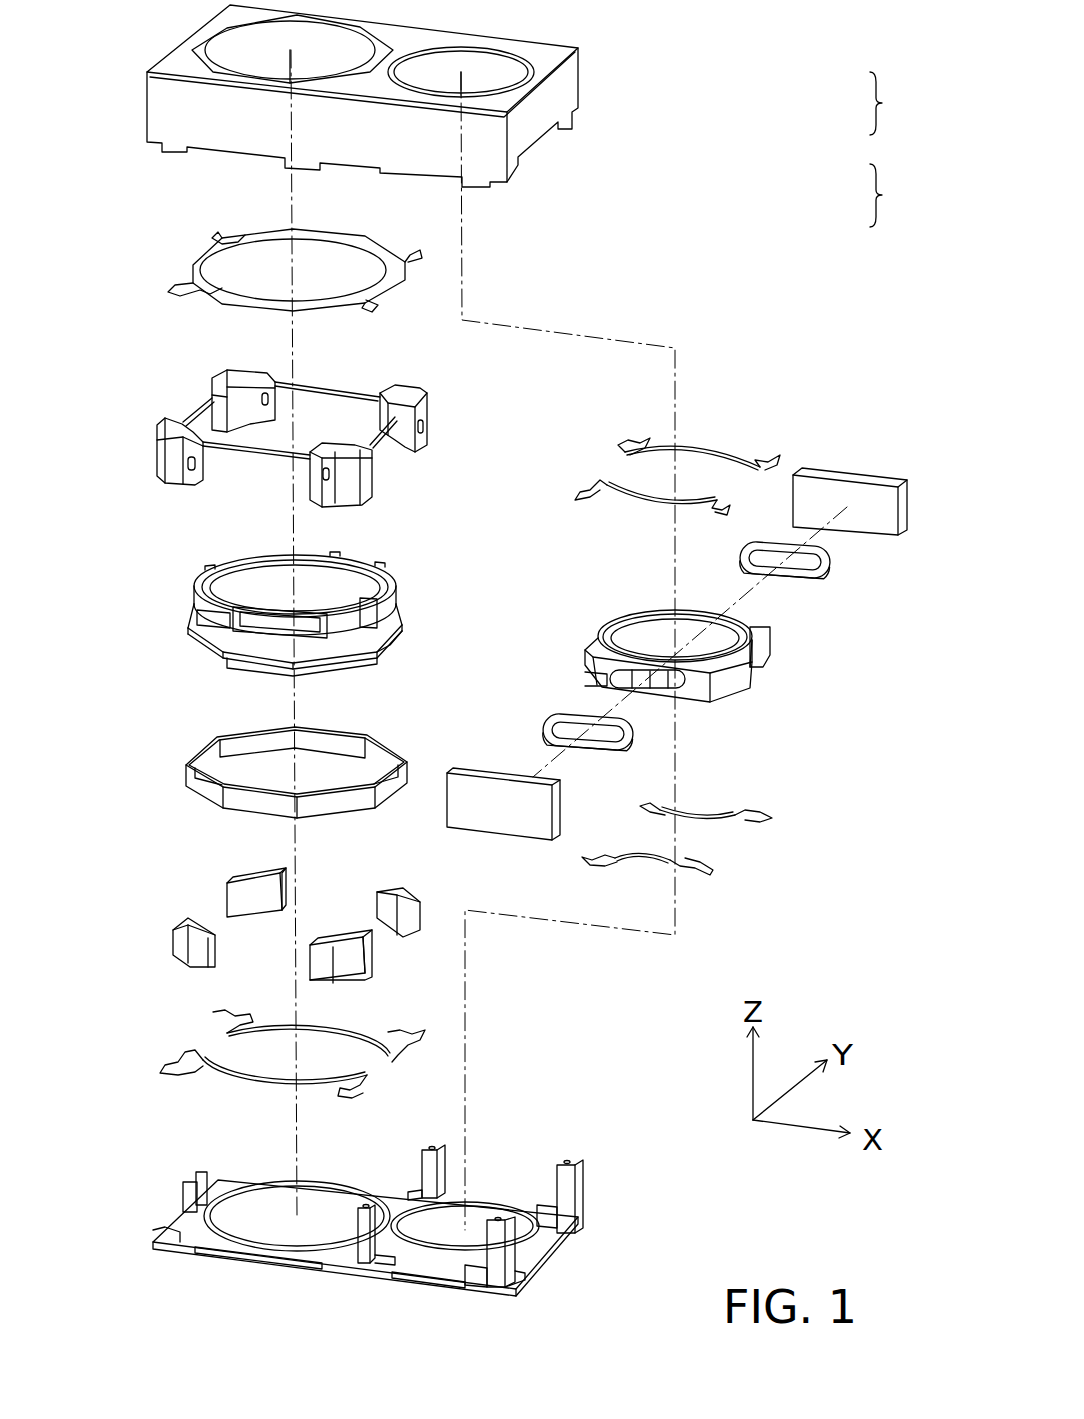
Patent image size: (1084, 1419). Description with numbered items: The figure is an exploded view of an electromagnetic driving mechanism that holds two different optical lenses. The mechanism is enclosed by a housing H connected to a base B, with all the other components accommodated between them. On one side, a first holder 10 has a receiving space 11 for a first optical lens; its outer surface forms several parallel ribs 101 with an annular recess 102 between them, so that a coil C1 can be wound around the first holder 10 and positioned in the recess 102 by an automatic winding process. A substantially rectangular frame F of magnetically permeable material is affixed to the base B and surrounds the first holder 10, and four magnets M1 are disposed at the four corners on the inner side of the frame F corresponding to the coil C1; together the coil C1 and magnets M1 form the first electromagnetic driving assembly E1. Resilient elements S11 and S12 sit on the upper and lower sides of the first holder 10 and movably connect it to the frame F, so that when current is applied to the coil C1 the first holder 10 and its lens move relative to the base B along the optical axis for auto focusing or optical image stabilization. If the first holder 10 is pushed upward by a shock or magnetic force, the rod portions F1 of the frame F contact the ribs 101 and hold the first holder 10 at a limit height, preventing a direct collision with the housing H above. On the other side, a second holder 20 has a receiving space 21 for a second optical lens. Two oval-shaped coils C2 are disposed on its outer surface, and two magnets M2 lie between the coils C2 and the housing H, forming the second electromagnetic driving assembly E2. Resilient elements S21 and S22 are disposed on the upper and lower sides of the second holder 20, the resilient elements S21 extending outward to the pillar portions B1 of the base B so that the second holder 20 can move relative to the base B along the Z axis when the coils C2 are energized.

The housing H is at (590, 87).
The resilient element S11 is at (203, 257).
The frame F is at (272, 427).
The rod portions F1 is at (200, 405).
The first holder 10 is at (303, 611).
The receiving space 11 is at (357, 585).
The parallel ribs 101 is at (400, 605).
The annular recess 102 is at (387, 627).
The coil C1 is at (193, 778).
The magnets M1 is at (180, 927).
The resilient element S12 is at (213, 1020).
The base B is at (410, 1203).
The pillar portions B1 is at (430, 1160).
The resilient element S21 is at (640, 443).
The magnets M2 is at (852, 475).
The oval-shaped coils C2 is at (828, 572).
The second holder 20 is at (718, 626).
The receiving space 21 is at (640, 642).
The resilient element S22 is at (707, 865).
The first electromagnetic driving assembly E1 is at (871, 103).
The second electromagnetic driving assembly E2 is at (871, 195).